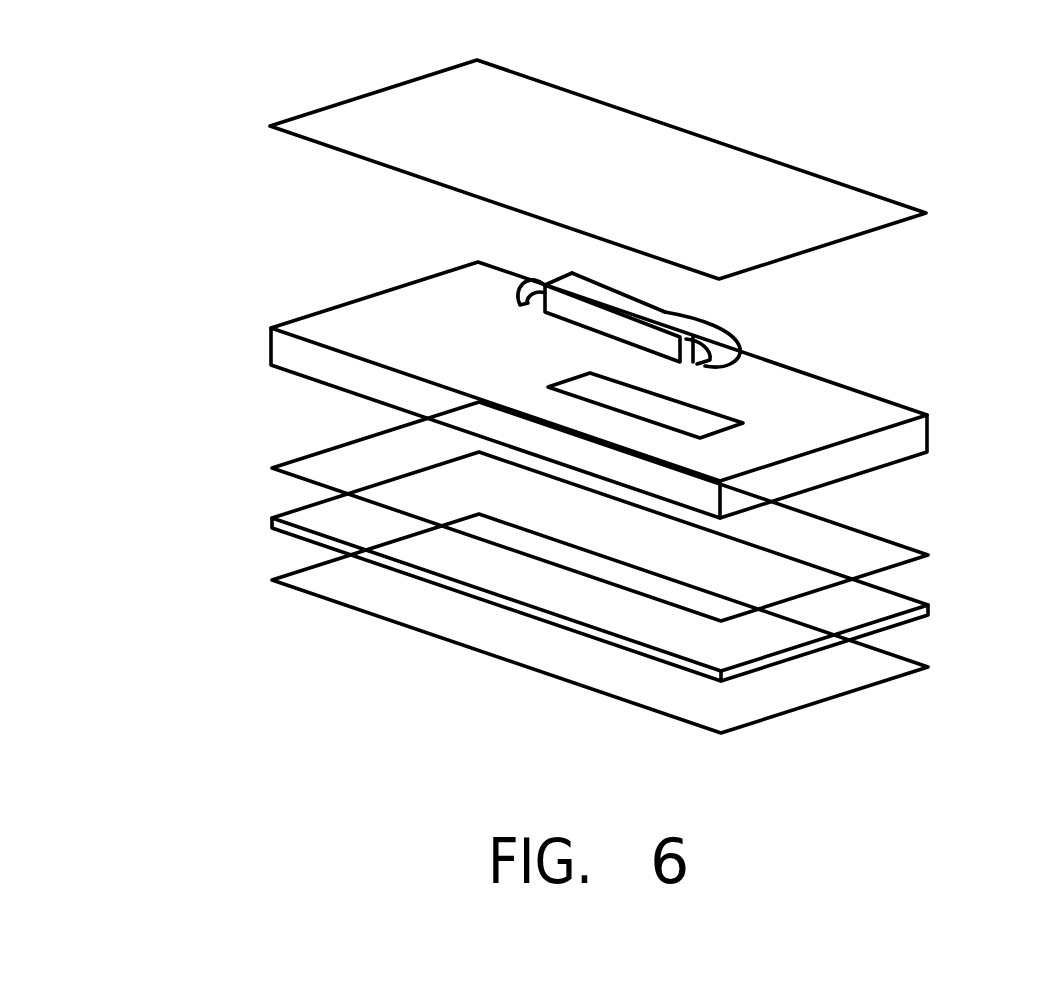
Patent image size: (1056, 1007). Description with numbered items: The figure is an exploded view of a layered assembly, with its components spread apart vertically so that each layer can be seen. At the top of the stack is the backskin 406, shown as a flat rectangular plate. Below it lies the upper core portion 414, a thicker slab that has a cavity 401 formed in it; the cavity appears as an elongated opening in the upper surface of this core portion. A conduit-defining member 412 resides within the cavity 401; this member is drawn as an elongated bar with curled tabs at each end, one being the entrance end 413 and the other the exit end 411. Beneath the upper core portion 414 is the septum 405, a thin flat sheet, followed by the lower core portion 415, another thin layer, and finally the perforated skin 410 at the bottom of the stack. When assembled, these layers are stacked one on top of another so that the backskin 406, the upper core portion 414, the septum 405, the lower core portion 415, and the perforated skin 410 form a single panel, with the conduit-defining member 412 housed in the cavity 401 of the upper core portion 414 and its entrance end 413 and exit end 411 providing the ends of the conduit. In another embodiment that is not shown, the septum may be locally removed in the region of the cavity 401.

The backskin 406 is at (372, 122).
The upper core portion 414 is at (347, 327).
The cavity 401 is at (690, 422).
The conduit-defining member 412 is at (680, 313).
The entrance end 413 is at (530, 313).
The exit end 411 is at (697, 364).
The septum 405 is at (352, 458).
The lower core portion 415 is at (340, 514).
The perforated skin 410 is at (373, 592).